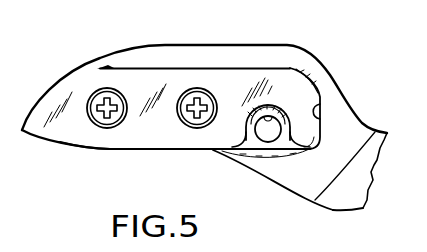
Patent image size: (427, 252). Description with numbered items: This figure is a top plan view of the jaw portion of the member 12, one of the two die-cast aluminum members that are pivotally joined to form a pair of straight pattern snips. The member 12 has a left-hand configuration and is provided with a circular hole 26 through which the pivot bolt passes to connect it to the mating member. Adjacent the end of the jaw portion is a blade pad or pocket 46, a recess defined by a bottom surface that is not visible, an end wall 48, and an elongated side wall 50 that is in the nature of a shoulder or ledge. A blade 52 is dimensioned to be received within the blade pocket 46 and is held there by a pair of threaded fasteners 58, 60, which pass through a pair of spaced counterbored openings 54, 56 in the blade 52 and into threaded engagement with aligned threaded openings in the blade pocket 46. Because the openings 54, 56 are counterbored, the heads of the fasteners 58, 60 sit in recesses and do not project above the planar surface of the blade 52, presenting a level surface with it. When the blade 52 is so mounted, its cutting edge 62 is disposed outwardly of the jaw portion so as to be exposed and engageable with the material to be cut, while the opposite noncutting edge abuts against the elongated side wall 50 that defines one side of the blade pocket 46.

The member 12 is at (316, 55).
The circular hole 26 is at (277, 108).
The blade pad or pocket 46 is at (282, 141).
The end wall 48 is at (318, 109).
The elongated side wall 50 is at (218, 68).
The blade 52 is at (176, 142).
The counterbored opening 54 is at (109, 128).
The counterbored opening 56 is at (202, 128).
The threaded fastener 58 is at (101, 100).
The threaded fastener 60 is at (190, 88).
The cutting edge 62 is at (148, 150).